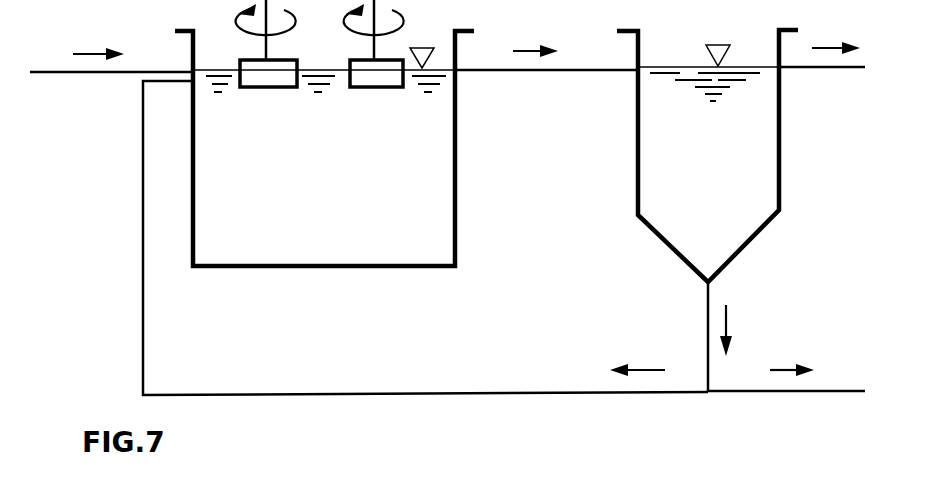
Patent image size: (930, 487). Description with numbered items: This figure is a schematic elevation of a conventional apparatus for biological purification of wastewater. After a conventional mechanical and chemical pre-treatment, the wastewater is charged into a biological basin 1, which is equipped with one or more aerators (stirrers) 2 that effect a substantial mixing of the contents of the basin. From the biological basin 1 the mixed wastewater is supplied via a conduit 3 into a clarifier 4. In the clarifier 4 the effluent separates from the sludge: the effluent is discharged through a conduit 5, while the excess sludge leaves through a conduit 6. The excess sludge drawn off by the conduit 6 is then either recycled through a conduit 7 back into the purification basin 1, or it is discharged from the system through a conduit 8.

The biological basin 1 is at (456, 215).
The aerators (stirrers) 2 is at (263, 87).
The conduit 3 is at (543, 70).
The clarifier 4 is at (637, 137).
The conduit 5 is at (832, 68).
The conduit 6 is at (708, 335).
The conduit 7 is at (370, 393).
The conduit 8 is at (822, 392).